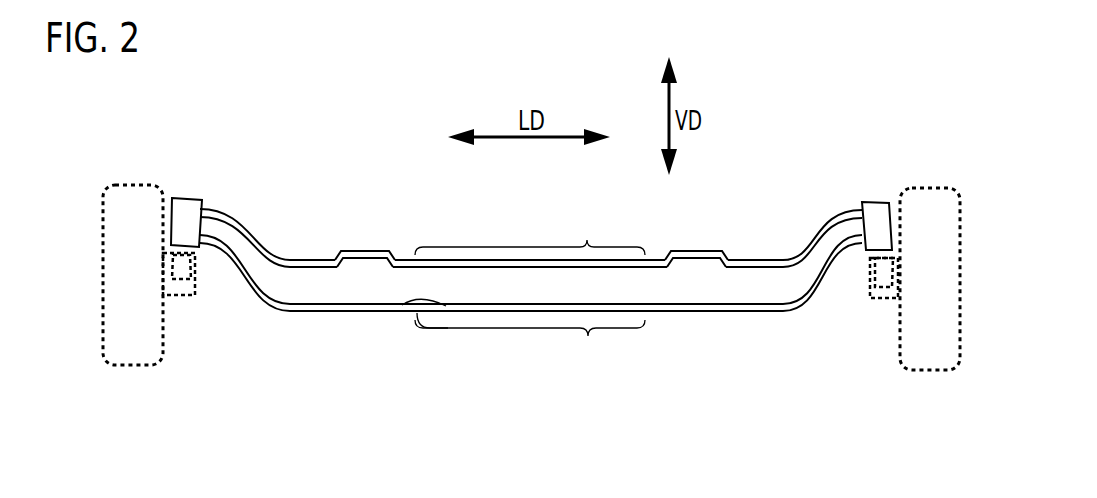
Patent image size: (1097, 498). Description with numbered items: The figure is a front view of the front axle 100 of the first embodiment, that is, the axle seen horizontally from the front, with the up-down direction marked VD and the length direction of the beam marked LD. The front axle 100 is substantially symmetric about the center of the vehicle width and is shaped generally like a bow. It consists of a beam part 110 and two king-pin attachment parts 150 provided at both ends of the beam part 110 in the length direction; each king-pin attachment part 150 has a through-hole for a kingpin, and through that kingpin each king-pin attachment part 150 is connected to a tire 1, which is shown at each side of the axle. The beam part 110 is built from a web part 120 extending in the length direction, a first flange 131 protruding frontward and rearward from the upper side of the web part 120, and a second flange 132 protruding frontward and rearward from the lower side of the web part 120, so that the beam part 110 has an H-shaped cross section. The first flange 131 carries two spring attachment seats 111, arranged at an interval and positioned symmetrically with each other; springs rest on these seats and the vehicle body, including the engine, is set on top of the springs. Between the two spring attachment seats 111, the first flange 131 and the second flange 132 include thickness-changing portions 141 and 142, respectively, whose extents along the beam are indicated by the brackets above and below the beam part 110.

The tire 1 is at (131, 185).
The front axle 100 is at (252, 134).
The beam part 110 is at (417, 395).
The spring attachment seat 111 is at (368, 242).
The web part 120 is at (531, 290).
The first flange 131 is at (447, 287).
The second flange 132 is at (401, 306).
The thickness-changing portion 141 is at (530, 232).
The thickness-changing portion 142 is at (530, 344).
The king-pin attachment part 150 is at (184, 203).